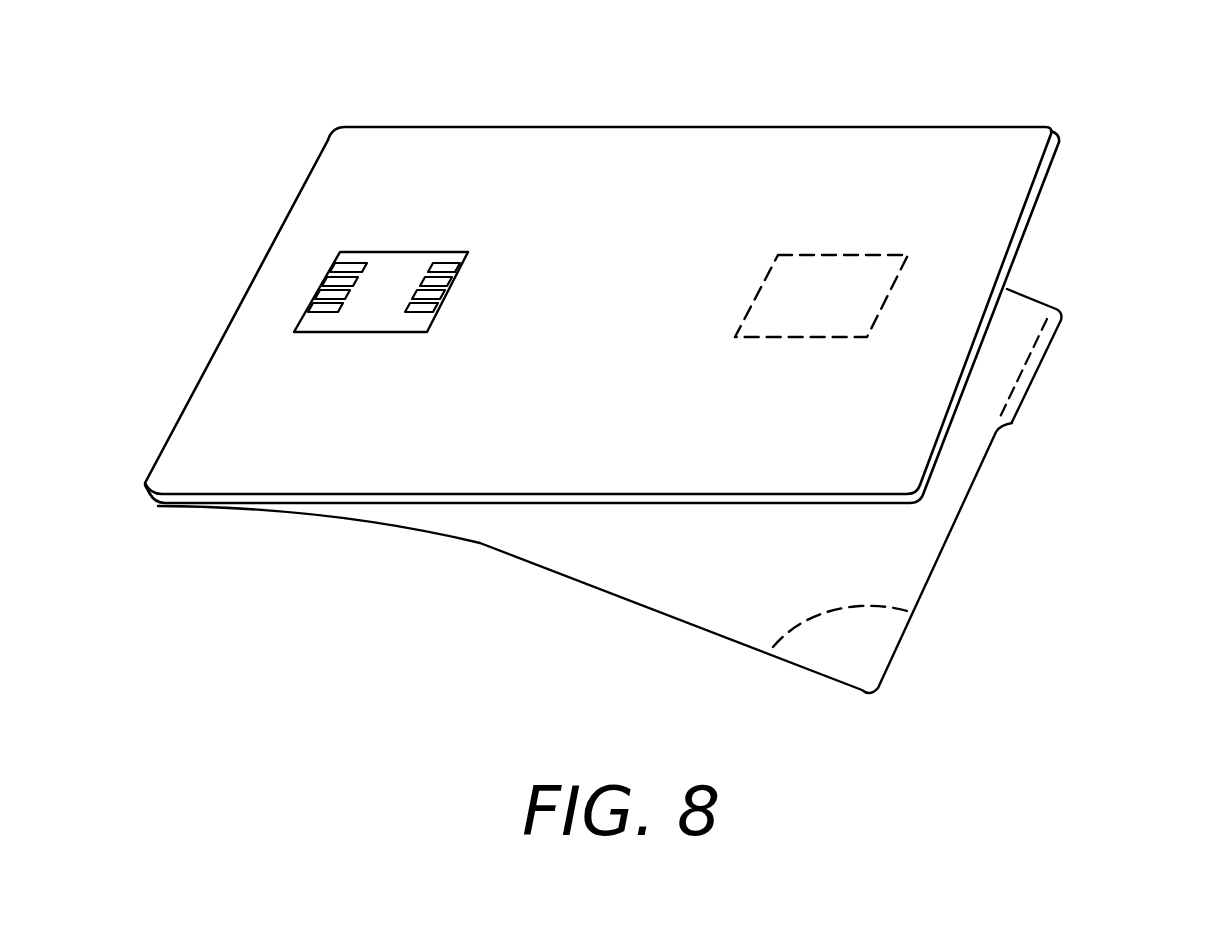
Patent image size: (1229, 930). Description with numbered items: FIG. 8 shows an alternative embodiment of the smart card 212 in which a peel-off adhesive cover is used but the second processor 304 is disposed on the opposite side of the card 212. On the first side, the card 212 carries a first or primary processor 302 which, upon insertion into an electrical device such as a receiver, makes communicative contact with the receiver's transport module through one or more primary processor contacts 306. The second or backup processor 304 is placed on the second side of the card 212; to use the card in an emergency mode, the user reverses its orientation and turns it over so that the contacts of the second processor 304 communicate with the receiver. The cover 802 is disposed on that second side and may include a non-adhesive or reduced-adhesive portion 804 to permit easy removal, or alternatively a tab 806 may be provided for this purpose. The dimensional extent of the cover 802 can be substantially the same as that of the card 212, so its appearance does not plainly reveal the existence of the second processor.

The smart card 212 is at (568, 187).
The primary processor 302 is at (402, 250).
The primary processor contacts 306 is at (357, 250).
The second processor 304 is at (835, 255).
The cover 802 is at (627, 557).
The tab 806 is at (1038, 371).
The non-adhesive portion 804 is at (870, 650).